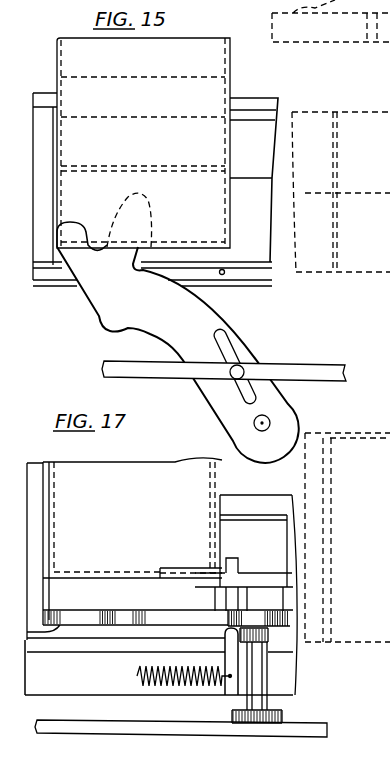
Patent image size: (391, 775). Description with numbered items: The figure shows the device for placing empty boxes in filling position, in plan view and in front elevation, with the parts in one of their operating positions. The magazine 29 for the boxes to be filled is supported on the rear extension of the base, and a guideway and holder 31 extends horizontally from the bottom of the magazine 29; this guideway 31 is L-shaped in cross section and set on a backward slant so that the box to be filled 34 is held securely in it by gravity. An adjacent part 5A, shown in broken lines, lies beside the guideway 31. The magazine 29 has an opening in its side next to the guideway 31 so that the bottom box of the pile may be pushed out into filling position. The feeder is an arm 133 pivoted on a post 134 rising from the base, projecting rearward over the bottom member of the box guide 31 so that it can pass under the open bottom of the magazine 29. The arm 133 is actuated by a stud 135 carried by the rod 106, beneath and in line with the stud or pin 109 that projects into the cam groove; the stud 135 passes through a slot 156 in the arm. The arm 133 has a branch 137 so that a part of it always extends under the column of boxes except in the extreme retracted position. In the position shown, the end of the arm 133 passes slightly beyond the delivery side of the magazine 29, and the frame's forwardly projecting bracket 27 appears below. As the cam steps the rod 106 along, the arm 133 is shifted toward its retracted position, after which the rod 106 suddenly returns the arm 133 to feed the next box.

In FIG. 15, the magazine 29 is at (218, 66).
In FIG. 17, the magazine 29 is at (132, 541).
In FIG. 15, the guideway and holder 31 is at (268, 112).
In FIG. 17, the guideway and holder 31 is at (265, 500).
In FIG. 15, the box to be filled 34 is at (45, 186).
In FIG. 17, the box to be filled 34 is at (43, 463).
In FIG. 15, the adjacent unit (phantom) 5A is at (322, 182).
In FIG. 15, the branch 137 is at (140, 198).
In FIG. 15, the arm 133 is at (100, 285).
In FIG. 17, the arm 133 is at (82, 613).
In FIG. 15, the slot 156 is at (228, 350).
In FIG. 15, the stud or pin 109 is at (245, 370).
In FIG. 17, the stud or pin 109 is at (233, 563).
In FIG. 15, the rod 106 is at (332, 372).
In FIG. 17, the rod 106 is at (267, 571).
In FIG. 17, the stud 135 is at (230, 687).
In FIG. 17, the post 134 is at (258, 675).
In FIG. 17, the forwardly projecting bracket 27 is at (222, 727).